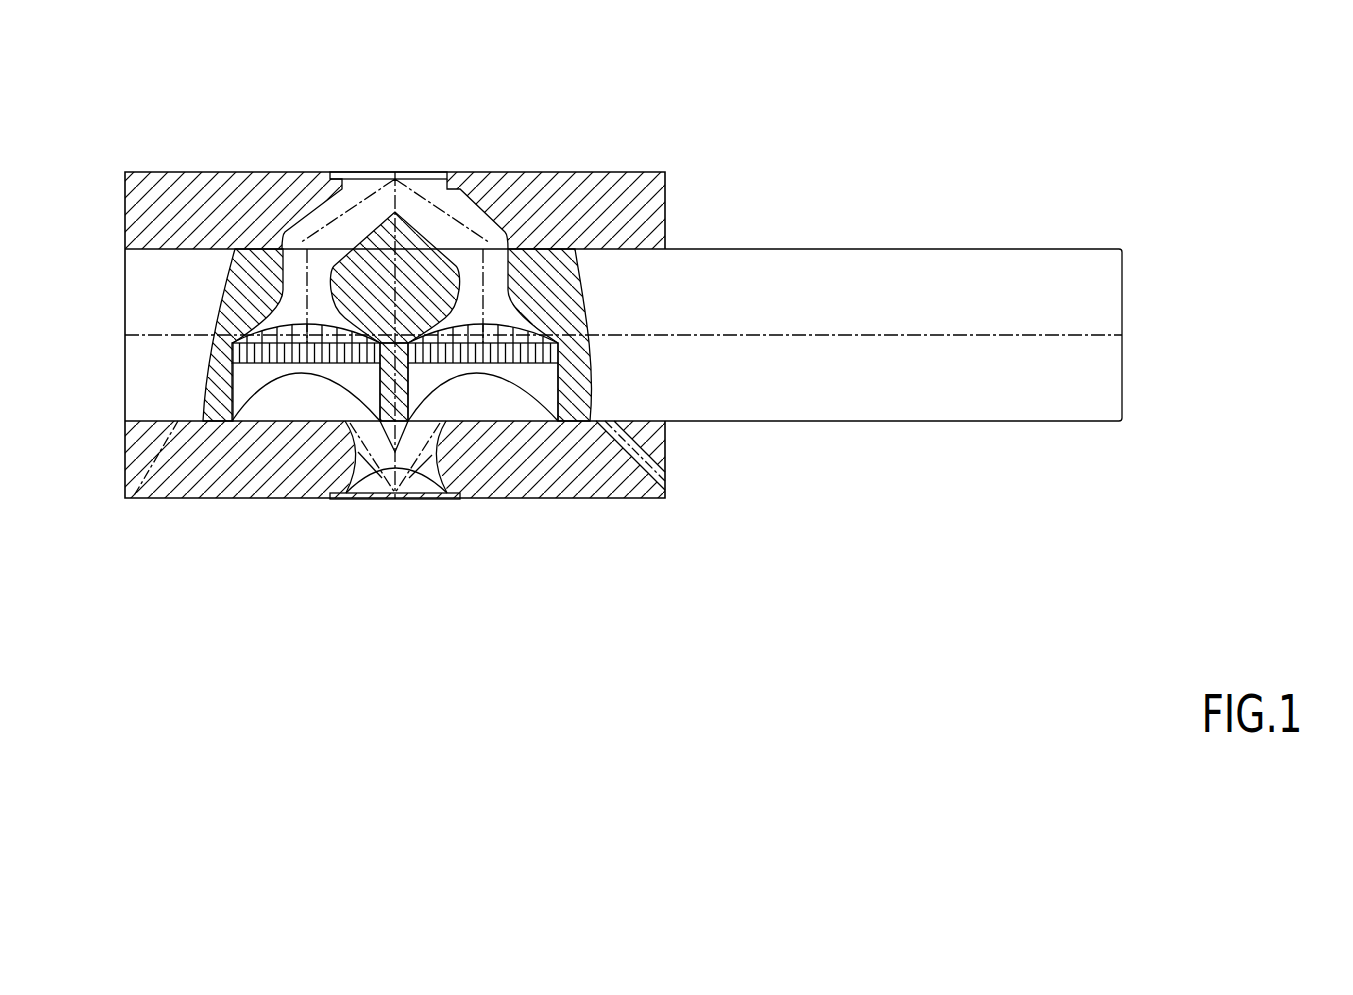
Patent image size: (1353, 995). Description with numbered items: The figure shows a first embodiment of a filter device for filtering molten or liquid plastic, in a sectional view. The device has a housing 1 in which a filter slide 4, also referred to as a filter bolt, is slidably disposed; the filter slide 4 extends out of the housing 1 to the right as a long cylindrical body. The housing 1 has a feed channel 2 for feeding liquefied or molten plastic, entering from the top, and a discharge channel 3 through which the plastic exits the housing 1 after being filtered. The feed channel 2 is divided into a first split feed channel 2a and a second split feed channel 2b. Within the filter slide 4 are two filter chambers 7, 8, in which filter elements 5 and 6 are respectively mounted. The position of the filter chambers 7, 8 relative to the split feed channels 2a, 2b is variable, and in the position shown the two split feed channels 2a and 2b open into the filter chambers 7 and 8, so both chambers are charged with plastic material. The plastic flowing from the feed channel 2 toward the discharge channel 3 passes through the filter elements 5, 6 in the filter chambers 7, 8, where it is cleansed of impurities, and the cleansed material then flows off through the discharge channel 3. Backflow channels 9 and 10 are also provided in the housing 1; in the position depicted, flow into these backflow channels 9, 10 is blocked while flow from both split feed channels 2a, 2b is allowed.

The housing 1 is at (551, 162).
The feed channel 2 is at (415, 515).
The first split feed channel 2a is at (343, 488).
The second split feed channel 2b is at (455, 480).
The discharge channel 3 is at (410, 163).
The filter slide 4 is at (880, 412).
The filter element 5 is at (250, 355).
The filter element 6 is at (540, 354).
The filter chamber 7 is at (306, 392).
The filter chamber 8 is at (483, 392).
The backflow channel 9 is at (153, 468).
The backflow channel 10 is at (632, 498).